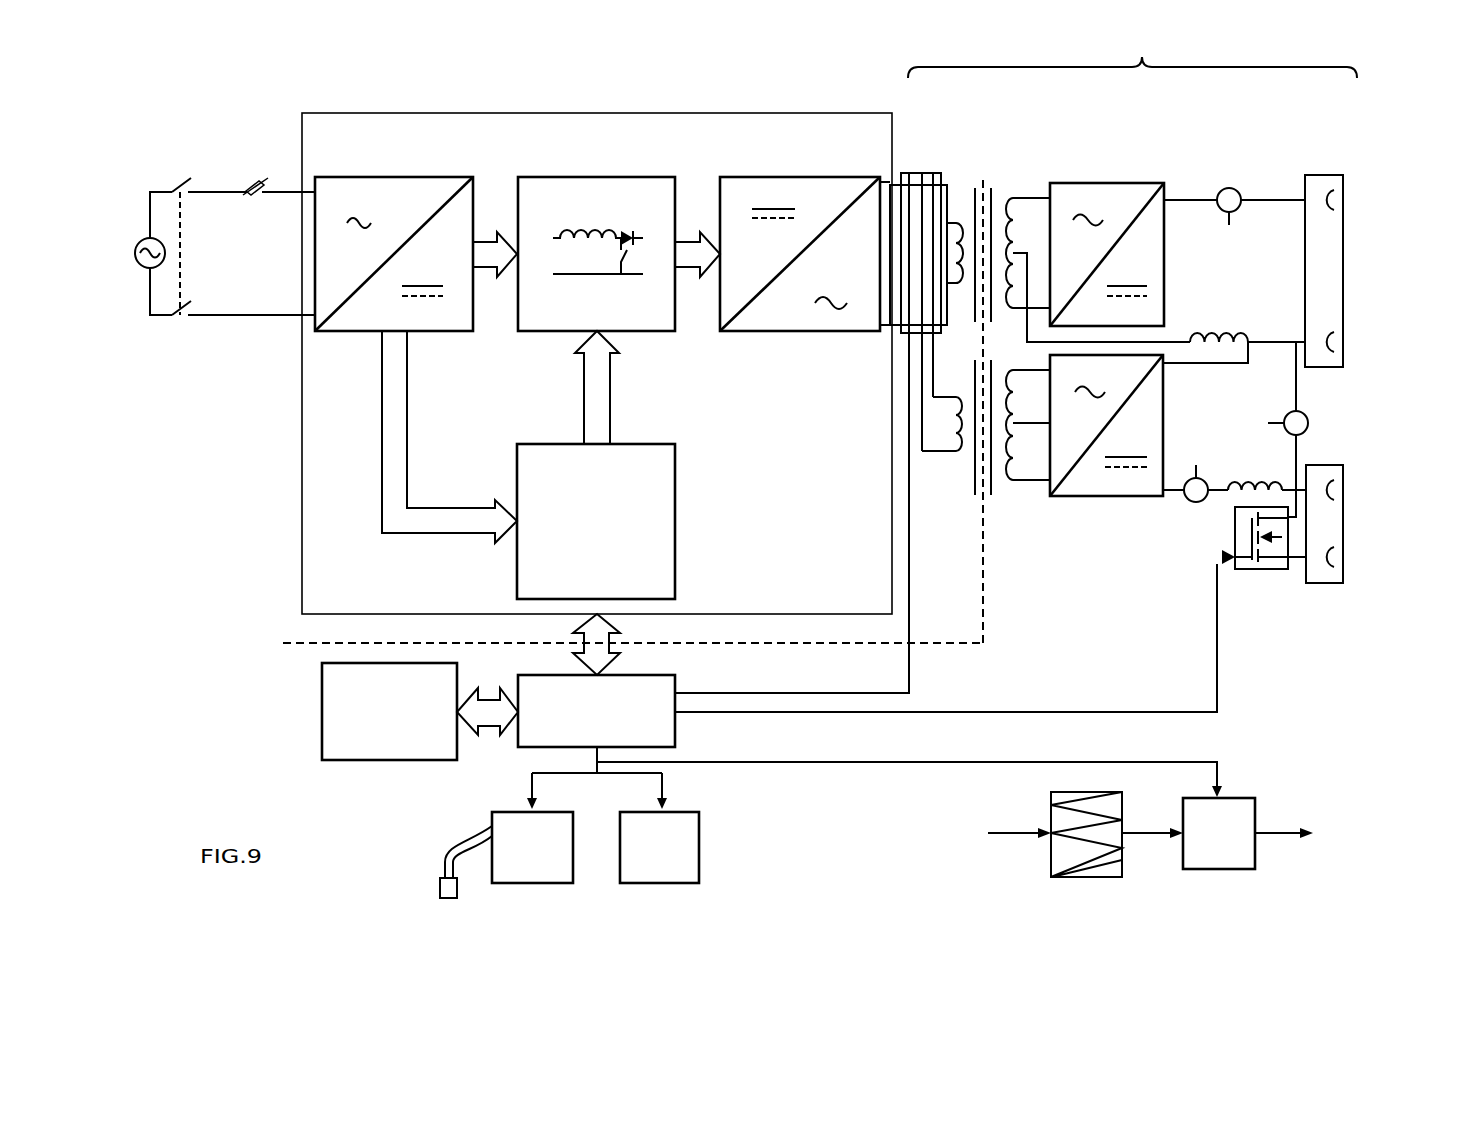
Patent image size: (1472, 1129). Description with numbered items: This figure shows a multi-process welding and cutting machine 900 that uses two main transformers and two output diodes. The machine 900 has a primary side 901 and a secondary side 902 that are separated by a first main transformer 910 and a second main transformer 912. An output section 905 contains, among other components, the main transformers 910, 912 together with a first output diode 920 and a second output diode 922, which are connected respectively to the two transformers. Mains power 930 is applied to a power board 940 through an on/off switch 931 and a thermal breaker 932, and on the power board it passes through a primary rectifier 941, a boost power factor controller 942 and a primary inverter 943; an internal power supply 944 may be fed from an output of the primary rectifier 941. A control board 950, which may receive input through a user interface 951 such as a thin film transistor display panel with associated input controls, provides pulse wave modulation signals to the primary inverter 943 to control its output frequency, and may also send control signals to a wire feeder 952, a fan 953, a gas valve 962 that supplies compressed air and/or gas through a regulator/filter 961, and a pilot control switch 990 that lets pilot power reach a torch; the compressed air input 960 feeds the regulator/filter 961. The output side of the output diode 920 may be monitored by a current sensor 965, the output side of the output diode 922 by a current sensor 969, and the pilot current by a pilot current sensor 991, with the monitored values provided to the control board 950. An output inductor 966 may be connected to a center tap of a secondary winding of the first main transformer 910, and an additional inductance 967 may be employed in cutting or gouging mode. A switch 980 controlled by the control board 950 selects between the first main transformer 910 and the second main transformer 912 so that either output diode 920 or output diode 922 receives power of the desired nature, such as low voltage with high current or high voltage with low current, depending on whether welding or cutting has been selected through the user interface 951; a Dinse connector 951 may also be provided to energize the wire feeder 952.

The machine 900 is at (814, 848).
The primary side 901 is at (633, 362).
The secondary side 902 is at (1102, 361).
The output section 905 is at (1132, 54).
The first main transformer 910 is at (1007, 126).
The second main transformer 912 is at (997, 483).
The first output diode 920 is at (1048, 246).
The second output diode 922 is at (1048, 420).
The mains power 930 is at (136, 266).
The on/off switch 931 is at (184, 113).
The thermal breaker 932 is at (247, 113).
The power board 940 is at (302, 562).
The primary rectifier 941 is at (357, 333).
The boost power factor controller (PFC) 942 is at (557, 333).
The primary inverter 943 is at (772, 334).
The internal power supply 944 is at (547, 443).
The control board 950 is at (640, 674).
The user interface 951 is at (439, 890).
The wire feeder 952 is at (509, 885).
The fan 953 is at (673, 885).
The compressed air input 960 is at (1008, 838).
The regulator/filter 961 is at (1122, 807).
The gas valve 962 is at (1255, 816).
The current sensor 965 is at (1258, 128).
The output inductor 966 is at (1212, 276).
The additional inductance 967 is at (1277, 482).
The current sensor 969 is at (1196, 503).
The switch 980 is at (913, 153).
The pilot control switch 990 is at (1285, 571).
The pilot current sensor 991 is at (1256, 402).